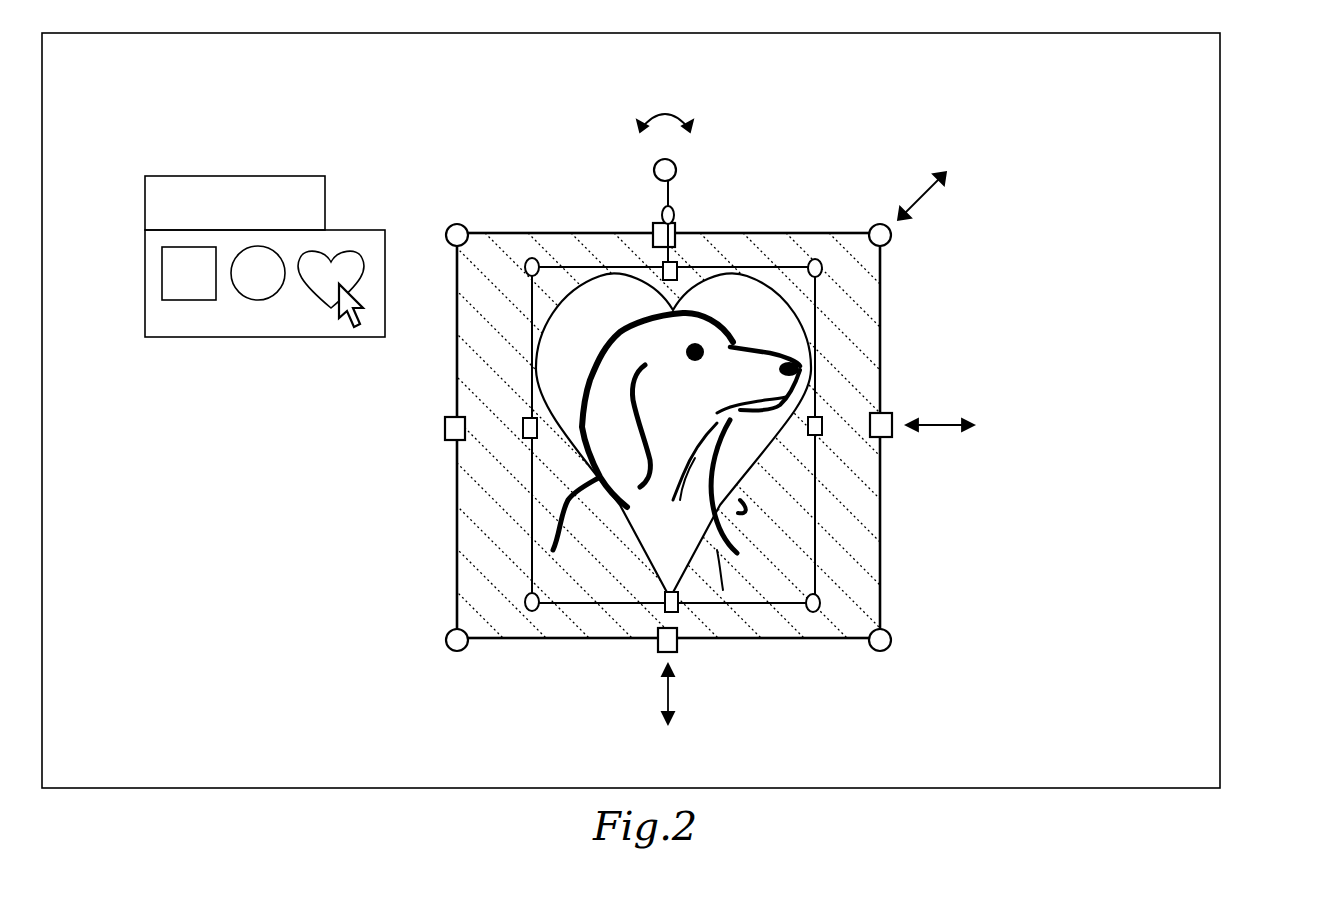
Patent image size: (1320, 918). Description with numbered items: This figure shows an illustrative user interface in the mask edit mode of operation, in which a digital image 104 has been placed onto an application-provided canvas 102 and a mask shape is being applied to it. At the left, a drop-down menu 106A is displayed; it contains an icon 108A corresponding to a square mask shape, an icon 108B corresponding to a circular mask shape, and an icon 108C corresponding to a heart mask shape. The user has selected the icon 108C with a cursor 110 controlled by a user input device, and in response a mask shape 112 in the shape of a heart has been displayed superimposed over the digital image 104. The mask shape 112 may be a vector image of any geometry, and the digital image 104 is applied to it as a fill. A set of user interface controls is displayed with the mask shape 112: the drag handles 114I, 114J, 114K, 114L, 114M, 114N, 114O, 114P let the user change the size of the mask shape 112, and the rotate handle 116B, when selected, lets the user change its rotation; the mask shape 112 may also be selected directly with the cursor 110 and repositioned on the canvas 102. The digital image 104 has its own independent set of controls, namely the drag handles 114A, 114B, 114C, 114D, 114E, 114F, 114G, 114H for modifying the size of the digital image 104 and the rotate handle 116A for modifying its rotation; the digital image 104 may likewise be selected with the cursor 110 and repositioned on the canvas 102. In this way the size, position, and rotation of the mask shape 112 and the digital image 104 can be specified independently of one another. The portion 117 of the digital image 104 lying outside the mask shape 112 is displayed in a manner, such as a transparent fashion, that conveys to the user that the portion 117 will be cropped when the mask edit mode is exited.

The canvas 102 is at (1198, 105).
The digital image 104 is at (866, 302).
The drop-down menu 106A is at (146, 248).
The icon 108A is at (183, 290).
The icon 108B is at (258, 288).
The icon 108C is at (330, 292).
The cursor 110 is at (358, 326).
The mask shape 112 is at (705, 558).
The drag handle 114A is at (455, 234).
The drag handle 114B is at (658, 235).
The drag handle 114C is at (878, 234).
The drag handle 114D is at (888, 417).
The drag handle 114E is at (884, 642).
The drag handle 114F is at (662, 646).
The drag handle 114G is at (456, 644).
The drag handle 114H is at (445, 430).
The drag handle 114I is at (531, 262).
The drag handle 114J is at (680, 272).
The drag handle 114K is at (822, 270).
The drag handle 114L is at (820, 432).
The drag handle 114M is at (814, 612).
The drag handle 114N is at (680, 610).
The drag handle 114O is at (531, 612).
The drag handle 114P is at (525, 426).
The rotate handle 116A is at (676, 170).
The rotate handle 116B is at (675, 214).
The portion 117 is at (473, 550).